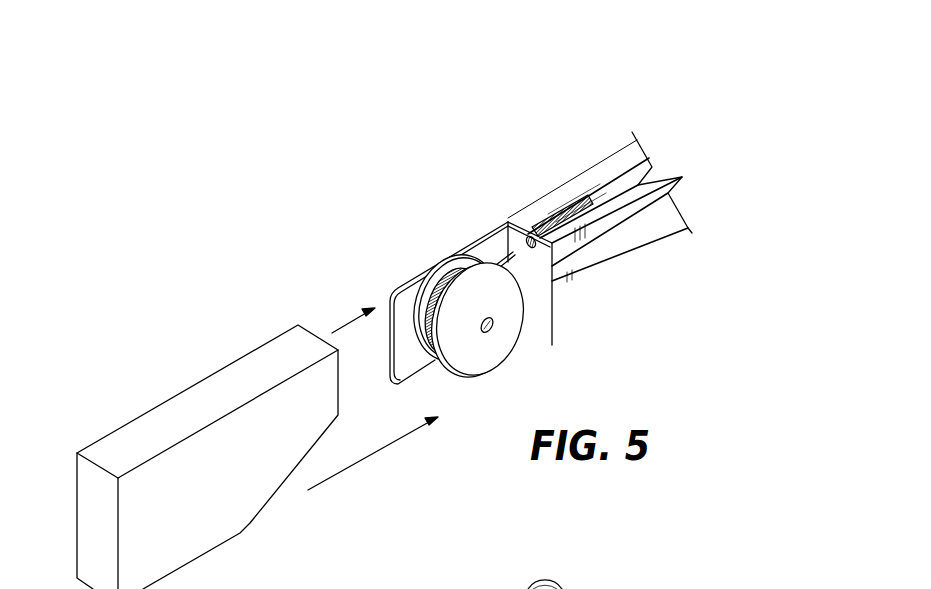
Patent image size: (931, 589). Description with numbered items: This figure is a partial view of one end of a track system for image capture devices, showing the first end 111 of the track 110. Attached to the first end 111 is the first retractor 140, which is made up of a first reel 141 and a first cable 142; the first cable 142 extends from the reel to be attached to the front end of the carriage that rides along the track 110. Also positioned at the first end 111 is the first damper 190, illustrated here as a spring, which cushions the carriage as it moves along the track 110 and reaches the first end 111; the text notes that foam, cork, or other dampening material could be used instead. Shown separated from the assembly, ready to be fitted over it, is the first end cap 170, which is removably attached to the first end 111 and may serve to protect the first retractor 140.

The track 110 is at (610, 165).
The first damper 190 is at (547, 221).
The first end 111 is at (497, 243).
The first cable 142 is at (508, 249).
The first reel 141 is at (502, 292).
The first retractor 140 is at (478, 363).
The first end cap 170 is at (242, 387).